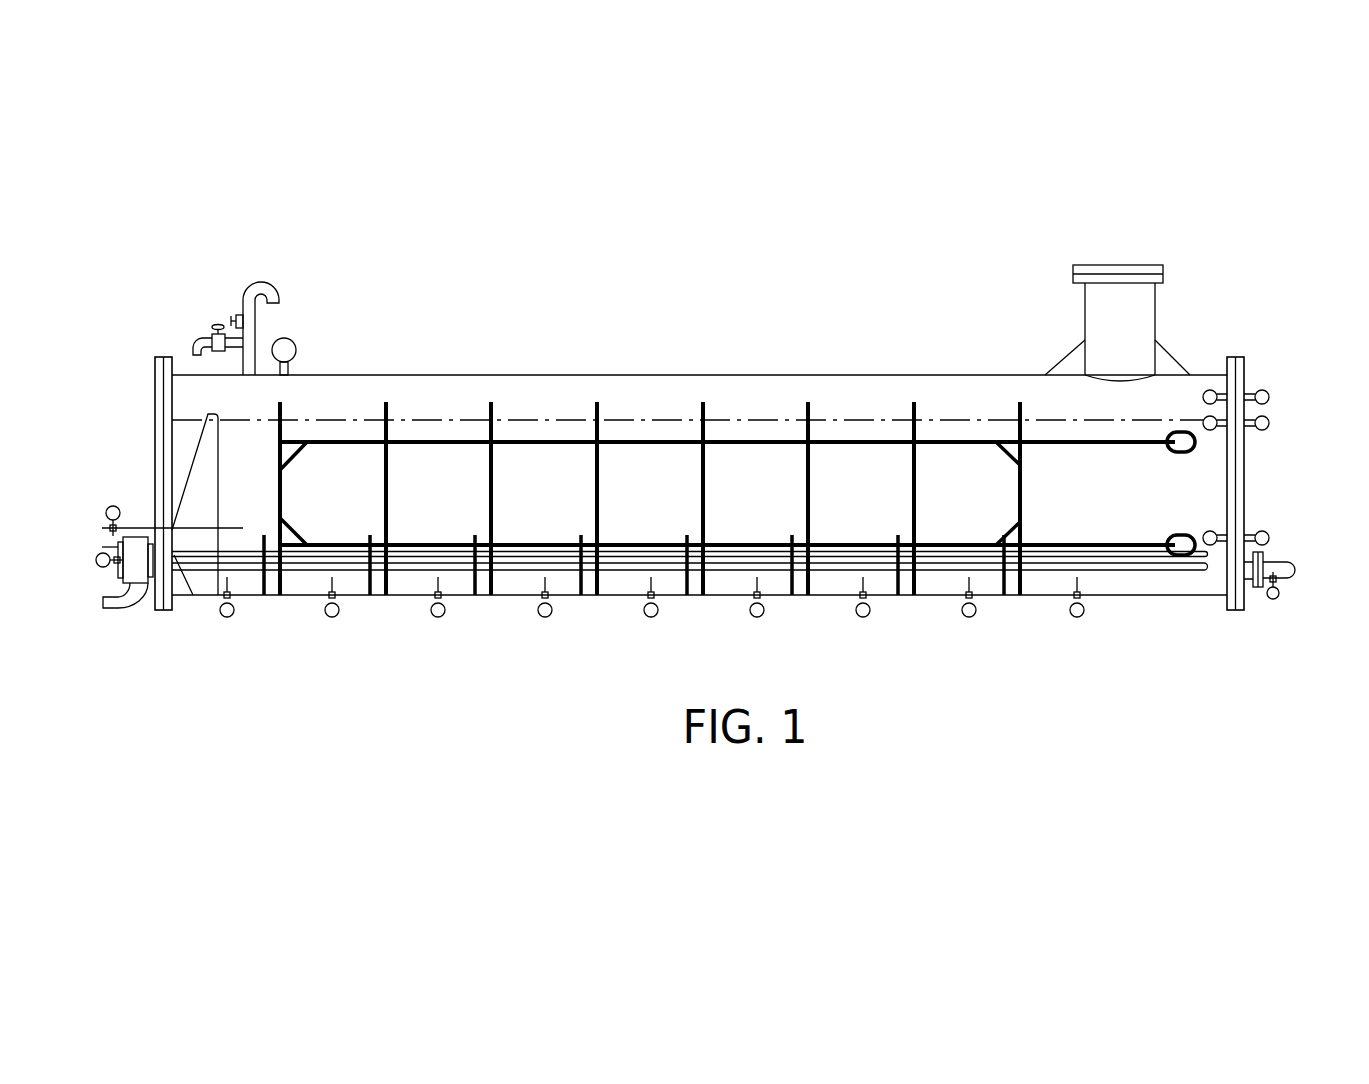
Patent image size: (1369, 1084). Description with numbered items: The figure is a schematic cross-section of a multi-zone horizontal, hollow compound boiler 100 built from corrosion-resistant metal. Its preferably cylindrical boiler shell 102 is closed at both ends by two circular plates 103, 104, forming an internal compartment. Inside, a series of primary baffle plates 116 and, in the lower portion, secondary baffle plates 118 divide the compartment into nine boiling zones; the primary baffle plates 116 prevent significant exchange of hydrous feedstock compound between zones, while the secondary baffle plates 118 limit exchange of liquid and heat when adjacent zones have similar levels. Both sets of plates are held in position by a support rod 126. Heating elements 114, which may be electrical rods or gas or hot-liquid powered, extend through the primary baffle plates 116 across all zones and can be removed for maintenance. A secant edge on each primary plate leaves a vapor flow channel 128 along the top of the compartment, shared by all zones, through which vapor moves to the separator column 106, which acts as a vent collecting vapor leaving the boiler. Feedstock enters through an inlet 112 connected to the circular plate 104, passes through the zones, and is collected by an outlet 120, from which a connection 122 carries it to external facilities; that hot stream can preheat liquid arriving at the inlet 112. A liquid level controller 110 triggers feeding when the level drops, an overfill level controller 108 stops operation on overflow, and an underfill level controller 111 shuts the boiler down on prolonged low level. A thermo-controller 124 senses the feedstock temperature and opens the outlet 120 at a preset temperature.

The multi-zone compound boiler 100 is at (486, 315).
The boiler shell 102 is at (760, 375).
The circular plate 103 is at (153, 372).
The circular plate 104 is at (1247, 373).
The separator column 106 is at (1157, 298).
The overfill level controller 108 is at (1263, 403).
The liquid level controller 110 is at (1270, 423).
The underfill level controller 111 is at (1272, 537).
The inlet 112 is at (1297, 575).
The heating elements 114 is at (1122, 570).
The primary baffle plates 116 is at (497, 412).
The secondary baffle plates 118 is at (470, 595).
The outlet 120 is at (190, 462).
The connection 122 is at (110, 610).
The thermo-controller 124 is at (106, 514).
The support rod 126 is at (615, 545).
The vapor flow channel 128 is at (723, 393).